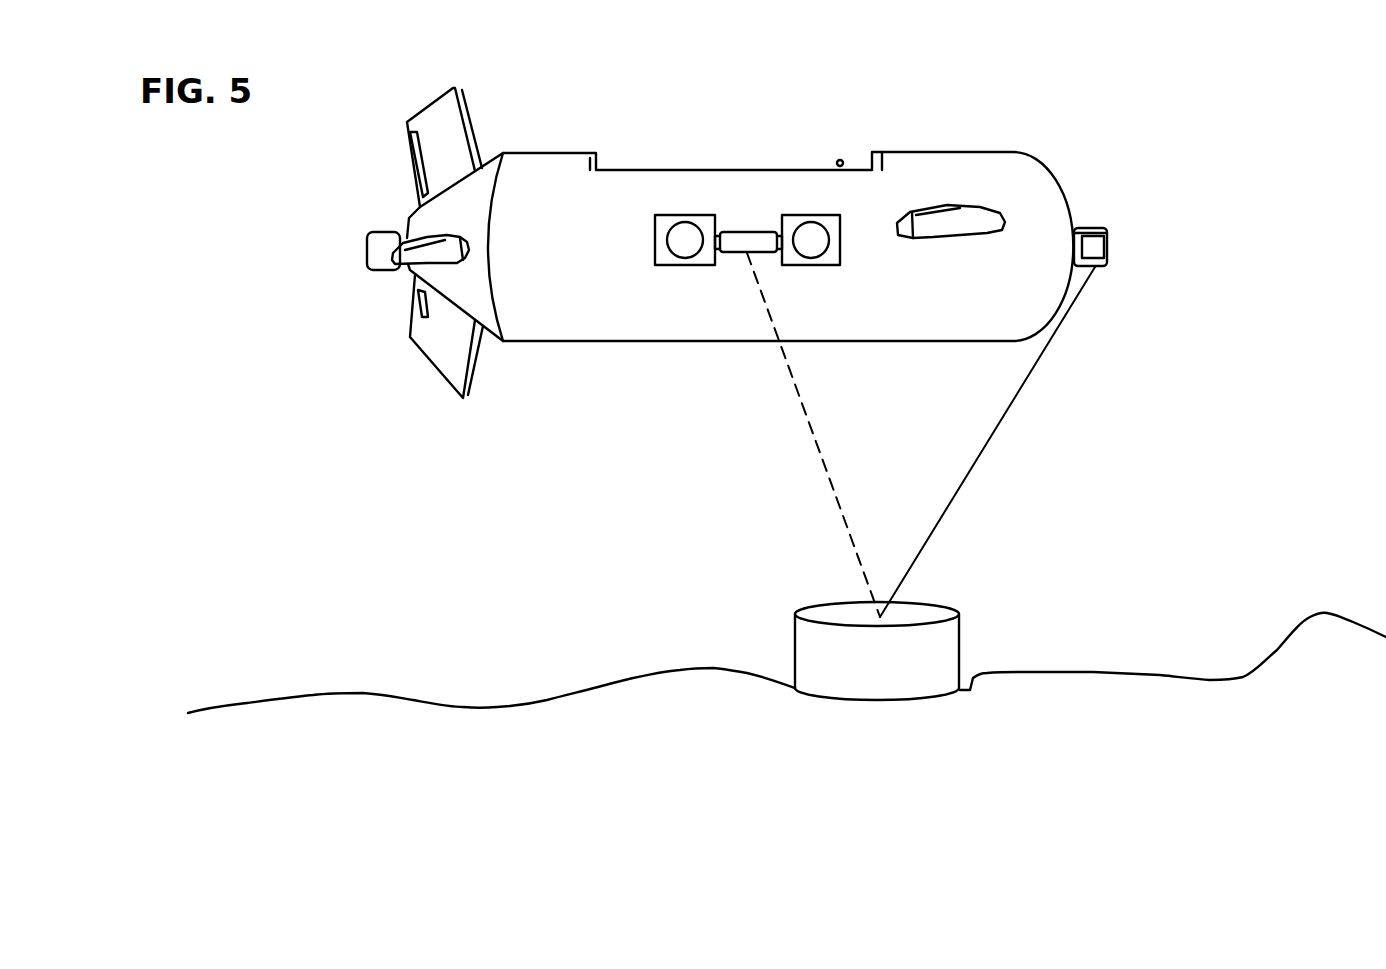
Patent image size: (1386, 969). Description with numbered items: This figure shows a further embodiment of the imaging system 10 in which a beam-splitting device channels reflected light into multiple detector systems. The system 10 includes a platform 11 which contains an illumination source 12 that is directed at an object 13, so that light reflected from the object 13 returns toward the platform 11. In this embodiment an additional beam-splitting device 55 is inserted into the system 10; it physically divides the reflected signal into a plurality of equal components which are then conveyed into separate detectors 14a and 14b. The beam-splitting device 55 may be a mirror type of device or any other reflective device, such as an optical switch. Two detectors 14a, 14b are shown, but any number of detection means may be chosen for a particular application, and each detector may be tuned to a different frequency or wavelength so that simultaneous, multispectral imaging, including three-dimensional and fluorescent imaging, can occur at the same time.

The system 10 is at (1036, 92).
The platform 11 is at (608, 342).
The illumination source 12 is at (1108, 243).
The object 13 is at (960, 648).
The detector 14a is at (682, 215).
The detector 14b is at (808, 215).
The beam-splitting device 55 is at (737, 252).